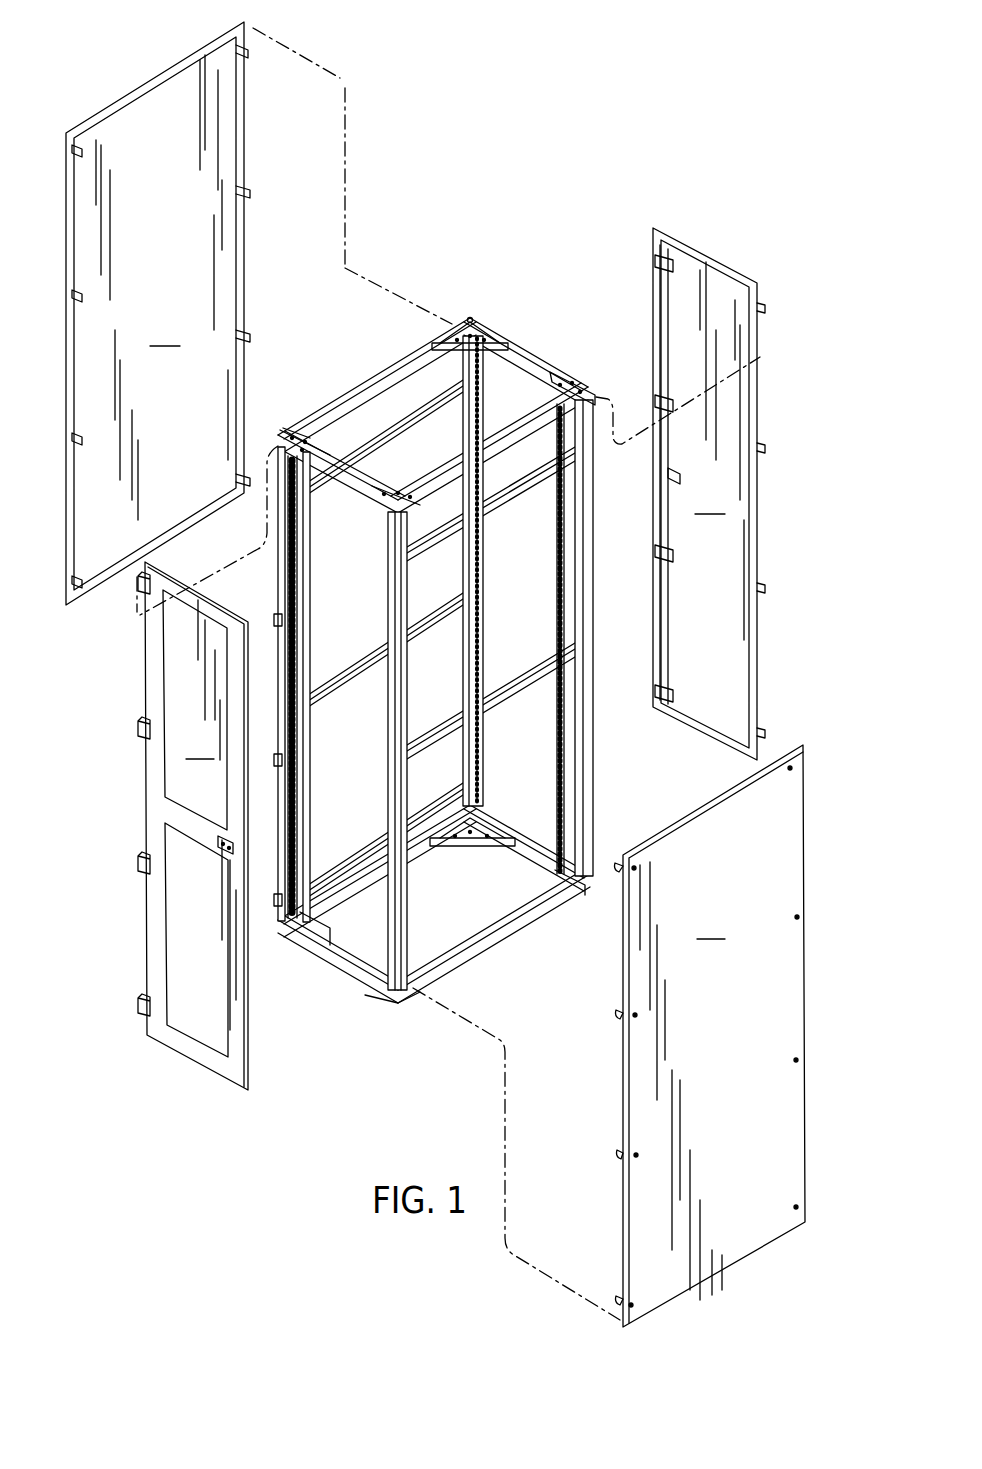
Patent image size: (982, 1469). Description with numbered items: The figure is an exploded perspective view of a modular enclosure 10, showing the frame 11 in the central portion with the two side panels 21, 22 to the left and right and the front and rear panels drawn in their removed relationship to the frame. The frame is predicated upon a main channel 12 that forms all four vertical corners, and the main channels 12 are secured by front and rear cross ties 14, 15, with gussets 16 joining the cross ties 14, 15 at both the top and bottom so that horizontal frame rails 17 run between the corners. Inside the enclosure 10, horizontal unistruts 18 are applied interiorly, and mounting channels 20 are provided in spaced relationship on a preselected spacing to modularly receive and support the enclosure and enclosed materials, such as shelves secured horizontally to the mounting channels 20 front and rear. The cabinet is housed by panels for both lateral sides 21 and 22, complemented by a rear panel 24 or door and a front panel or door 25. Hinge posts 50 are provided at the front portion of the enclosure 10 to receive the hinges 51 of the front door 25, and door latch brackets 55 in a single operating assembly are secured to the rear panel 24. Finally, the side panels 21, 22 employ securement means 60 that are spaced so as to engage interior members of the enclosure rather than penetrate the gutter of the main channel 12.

The modular enclosure 10 is at (517, 273).
The frame 11 is at (433, 633).
The main channel 12 is at (592, 578).
The front cross tie 14 is at (514, 826).
The rear cross tie 15 is at (540, 350).
The gusset 16 is at (578, 382).
The horizontal frame rail 17 is at (352, 392).
The horizontal unistrut 18 is at (437, 414).
The mounting channel 20 is at (313, 587).
The side panel 21 is at (719, 1036).
The side panel 22 is at (158, 313).
The rear panel 24 is at (709, 494).
The front door 25 is at (154, 826).
The hinge post 50 is at (274, 620).
The hinge 51 is at (136, 731).
The door latch bracket 55 is at (667, 406).
The securement means 60 is at (801, 914).